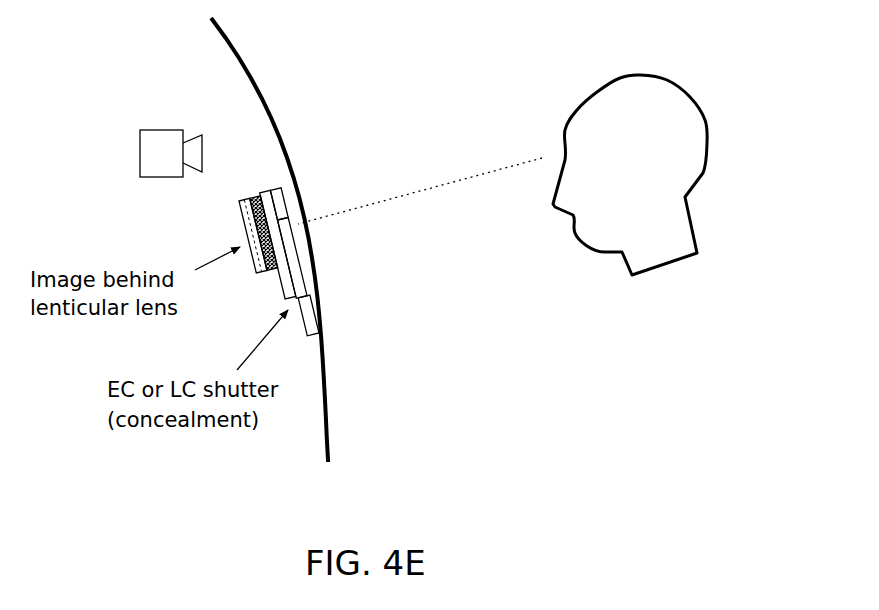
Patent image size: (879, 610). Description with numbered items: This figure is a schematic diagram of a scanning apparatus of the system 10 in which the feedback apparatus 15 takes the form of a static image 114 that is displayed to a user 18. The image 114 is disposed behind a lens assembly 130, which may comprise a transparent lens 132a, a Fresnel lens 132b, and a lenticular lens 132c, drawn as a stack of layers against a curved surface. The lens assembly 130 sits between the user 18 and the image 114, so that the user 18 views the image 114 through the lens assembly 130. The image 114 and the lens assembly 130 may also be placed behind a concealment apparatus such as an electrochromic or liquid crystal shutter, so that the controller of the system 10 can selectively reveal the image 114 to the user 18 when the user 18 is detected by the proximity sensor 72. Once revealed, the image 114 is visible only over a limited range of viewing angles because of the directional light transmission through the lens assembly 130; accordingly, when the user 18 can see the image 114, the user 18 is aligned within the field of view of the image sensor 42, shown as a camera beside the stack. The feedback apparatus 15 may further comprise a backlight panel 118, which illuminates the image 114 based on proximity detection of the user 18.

The system 10 is at (351, 76).
The feedback apparatus 15 is at (423, 284).
The user 18 is at (665, 215).
The image sensor 42 is at (147, 153).
The proximity sensor 72 is at (316, 318).
The image 114 is at (241, 200).
The backlight panel 118 is at (241, 232).
The lens assembly 130 is at (251, 141).
The transparent lens 132a is at (289, 220).
The Fresnel lens 132b is at (296, 273).
The lenticular lens 132c is at (257, 196).